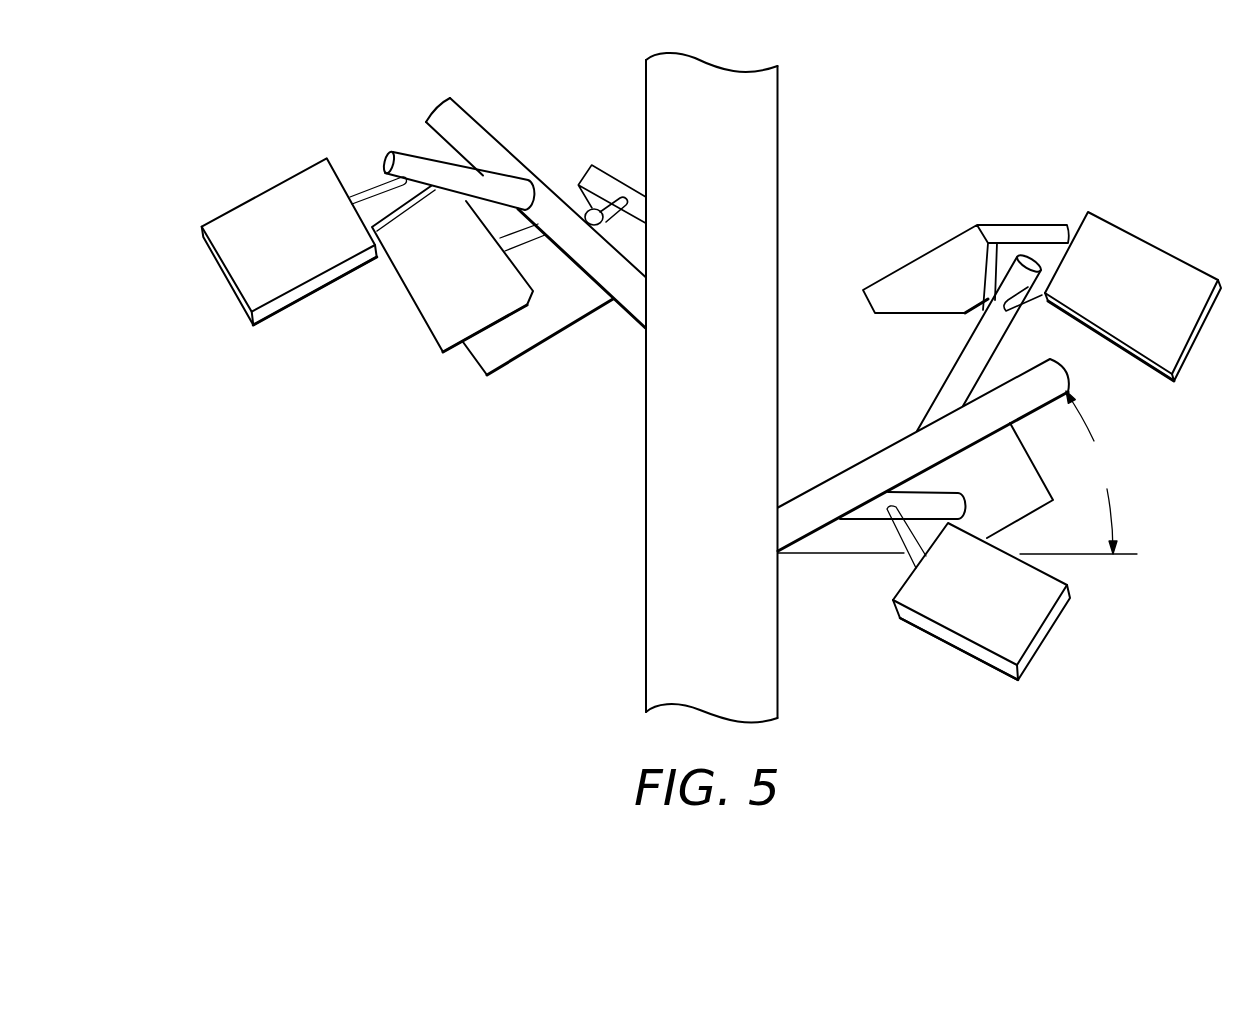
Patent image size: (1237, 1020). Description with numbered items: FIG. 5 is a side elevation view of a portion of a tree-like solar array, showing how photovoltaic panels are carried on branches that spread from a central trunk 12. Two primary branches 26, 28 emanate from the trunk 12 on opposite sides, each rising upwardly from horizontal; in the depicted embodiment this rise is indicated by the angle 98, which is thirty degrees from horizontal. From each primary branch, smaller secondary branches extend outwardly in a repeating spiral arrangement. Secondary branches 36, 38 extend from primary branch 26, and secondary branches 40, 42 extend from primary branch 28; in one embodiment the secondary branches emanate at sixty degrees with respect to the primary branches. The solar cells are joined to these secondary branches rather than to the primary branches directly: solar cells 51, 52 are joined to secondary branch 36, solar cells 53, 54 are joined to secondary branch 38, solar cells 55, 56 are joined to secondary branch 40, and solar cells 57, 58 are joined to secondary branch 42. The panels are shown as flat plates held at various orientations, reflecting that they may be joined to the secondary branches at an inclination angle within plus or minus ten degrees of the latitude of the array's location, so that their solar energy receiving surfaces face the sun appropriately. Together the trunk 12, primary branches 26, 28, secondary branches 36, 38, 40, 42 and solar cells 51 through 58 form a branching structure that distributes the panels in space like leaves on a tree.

The pole 12 is at (645, 502).
The primary branch 26 is at (850, 469).
The primary branch 28 is at (507, 150).
The secondary branch 36 is at (942, 490).
The secondary branch 38 is at (958, 362).
The secondary branch 40 is at (419, 152).
The secondary branch 42 is at (621, 237).
The solar cell 51 is at (1047, 643).
The solar cell 52 is at (1037, 462).
The solar cell 53 is at (1152, 243).
The solar cell 54 is at (927, 253).
The solar cell 55 is at (225, 277).
The solar cell 56 is at (407, 296).
The solar cell 57 is at (541, 350).
The solar cell 58 is at (592, 165).
The angle 98 is at (957, 472).